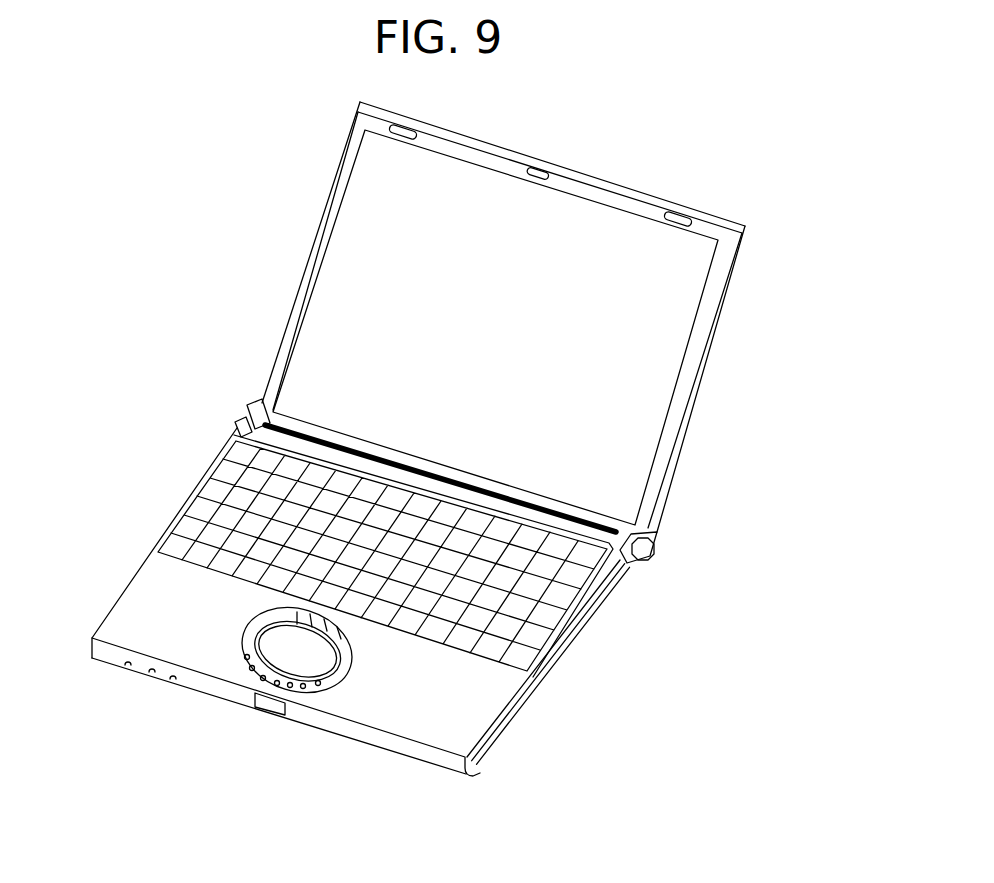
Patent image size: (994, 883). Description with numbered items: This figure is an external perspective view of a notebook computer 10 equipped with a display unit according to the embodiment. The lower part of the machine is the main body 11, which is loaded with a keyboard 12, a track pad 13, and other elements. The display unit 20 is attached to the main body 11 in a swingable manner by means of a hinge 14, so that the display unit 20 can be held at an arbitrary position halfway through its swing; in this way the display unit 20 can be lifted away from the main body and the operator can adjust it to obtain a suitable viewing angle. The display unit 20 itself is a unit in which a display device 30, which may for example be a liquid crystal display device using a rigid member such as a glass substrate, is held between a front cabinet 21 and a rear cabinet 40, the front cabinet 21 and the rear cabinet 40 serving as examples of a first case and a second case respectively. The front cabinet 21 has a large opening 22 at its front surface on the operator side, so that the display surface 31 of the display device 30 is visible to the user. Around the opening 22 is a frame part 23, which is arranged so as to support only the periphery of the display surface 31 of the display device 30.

The notebook computer 10 is at (767, 528).
The main body 11 is at (508, 725).
The keyboard 12 is at (220, 480).
The track pad 13 is at (307, 658).
The hinge 14 is at (650, 558).
The display unit 20 is at (677, 403).
The front cabinet 21 is at (658, 453).
The opening 22 is at (680, 298).
The frame part 23 is at (295, 318).
The display device 30 is at (648, 370).
The display surface 31 is at (668, 333).
The rear cabinet 40 is at (668, 489).